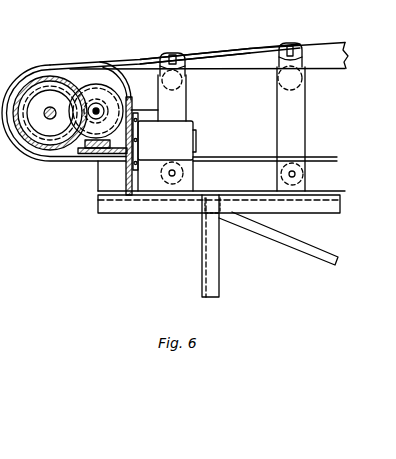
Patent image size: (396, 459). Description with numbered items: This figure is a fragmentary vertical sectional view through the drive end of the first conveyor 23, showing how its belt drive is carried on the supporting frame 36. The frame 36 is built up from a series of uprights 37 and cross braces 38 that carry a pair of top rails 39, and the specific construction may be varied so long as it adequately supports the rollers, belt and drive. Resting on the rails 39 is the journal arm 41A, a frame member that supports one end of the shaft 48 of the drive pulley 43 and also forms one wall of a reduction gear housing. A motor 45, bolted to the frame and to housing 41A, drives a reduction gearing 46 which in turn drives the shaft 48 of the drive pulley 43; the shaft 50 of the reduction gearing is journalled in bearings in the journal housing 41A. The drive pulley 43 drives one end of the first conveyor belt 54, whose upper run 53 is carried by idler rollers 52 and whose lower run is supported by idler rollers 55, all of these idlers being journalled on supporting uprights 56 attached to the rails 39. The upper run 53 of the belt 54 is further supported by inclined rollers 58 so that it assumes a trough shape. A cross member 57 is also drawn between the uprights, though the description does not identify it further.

The first conveyor 23 is at (249, 43).
The supporting frame 36 is at (251, 246).
The uprights 37 is at (220, 263).
The cross braces 38 is at (301, 247).
The top rails 39 is at (327, 208).
The journal arm (frame member) 41A is at (183, 105).
The drive pulley 43 is at (33, 71).
The motor 45 is at (196, 124).
The reduction gearing 46 is at (80, 153).
The shaft of drive pulley 48 is at (52, 107).
The shaft of reduction gearing 50 is at (98, 108).
The idler rollers 52 is at (188, 85).
The upper run of conveyor belt 53 is at (268, 52).
The first conveyor belt 54 is at (223, 51).
The idler rollers (lower run) 55 is at (184, 175).
The supporting uprights 56 is at (306, 119).
The cross member 57 is at (236, 157).
The inclined rollers 58 is at (181, 56).